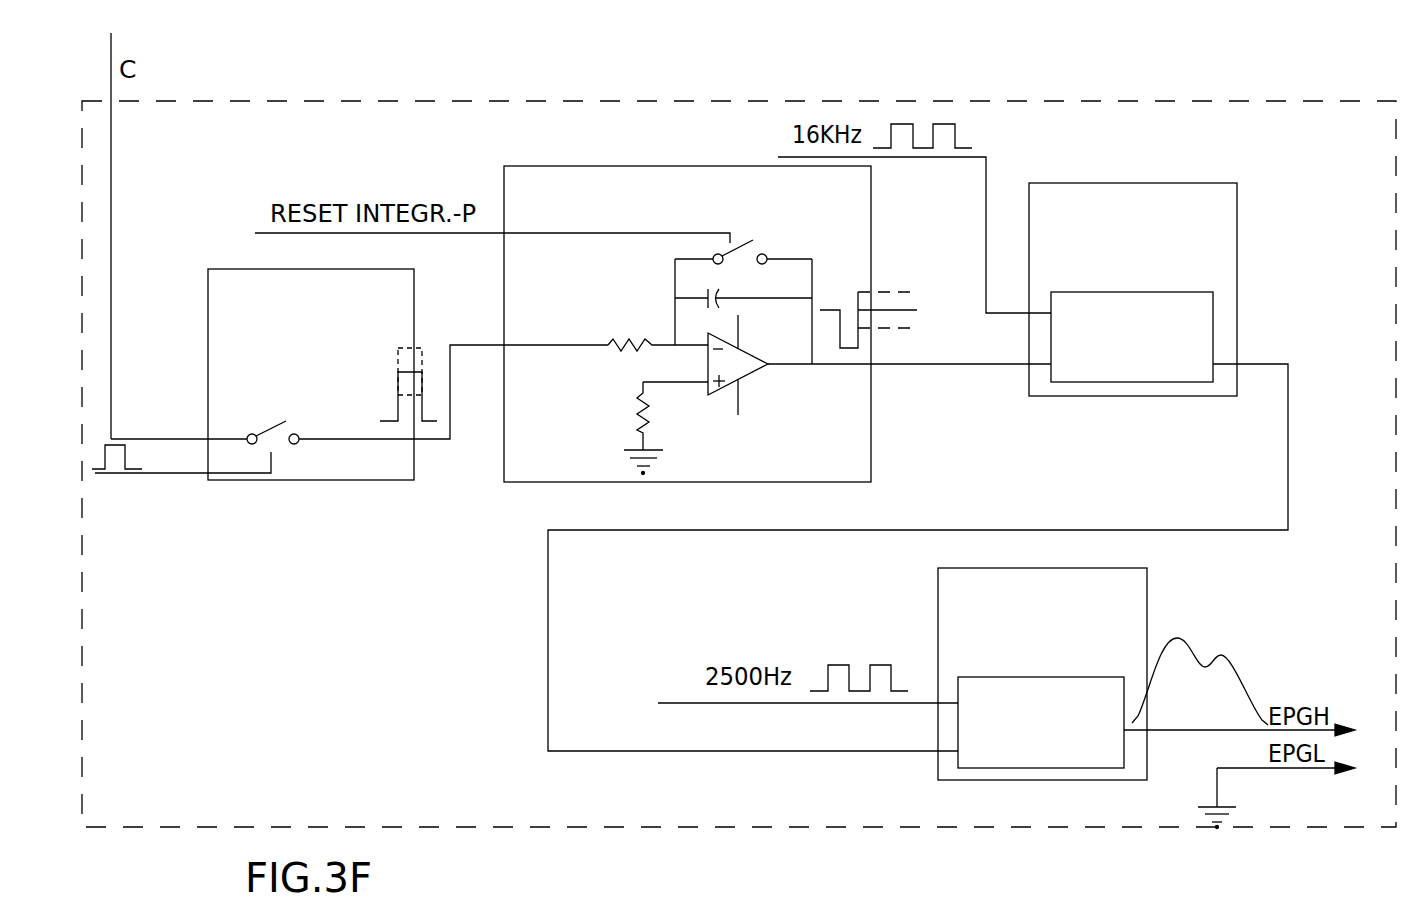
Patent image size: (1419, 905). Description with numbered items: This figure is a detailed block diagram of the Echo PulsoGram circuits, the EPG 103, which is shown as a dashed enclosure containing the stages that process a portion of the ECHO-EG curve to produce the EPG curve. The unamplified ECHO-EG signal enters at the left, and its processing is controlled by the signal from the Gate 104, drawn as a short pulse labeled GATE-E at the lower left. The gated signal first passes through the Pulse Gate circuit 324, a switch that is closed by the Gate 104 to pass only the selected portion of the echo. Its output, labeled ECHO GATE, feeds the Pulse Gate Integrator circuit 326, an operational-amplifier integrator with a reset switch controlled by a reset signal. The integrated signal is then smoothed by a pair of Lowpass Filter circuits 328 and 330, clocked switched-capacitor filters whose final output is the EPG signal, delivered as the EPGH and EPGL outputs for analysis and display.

The EPG 103 is at (404, 101).
The Gate 104 is at (128, 504).
The Pulse Gate circuit 324 is at (227, 268).
The Pulse Gate Integrator circuit 326 is at (548, 166).
The Lowpass Filter circuit 328 is at (1150, 183).
The Lowpass Filter circuit 330 is at (1041, 780).